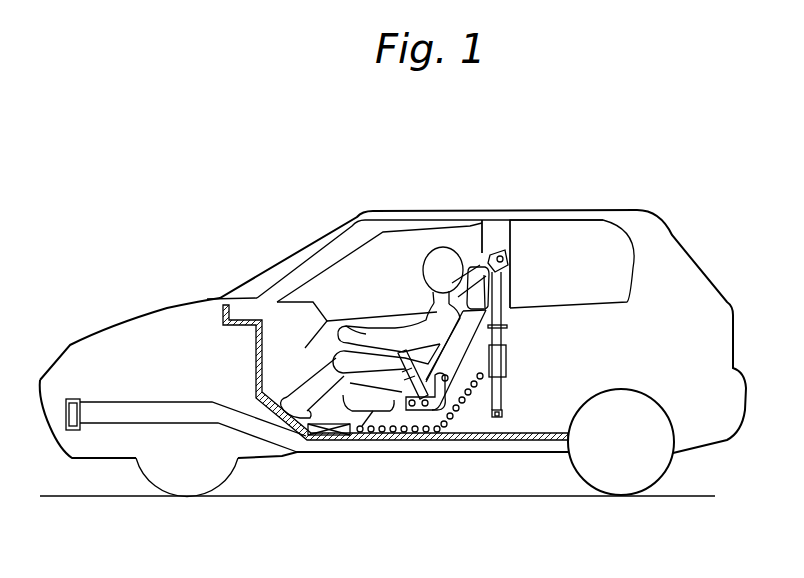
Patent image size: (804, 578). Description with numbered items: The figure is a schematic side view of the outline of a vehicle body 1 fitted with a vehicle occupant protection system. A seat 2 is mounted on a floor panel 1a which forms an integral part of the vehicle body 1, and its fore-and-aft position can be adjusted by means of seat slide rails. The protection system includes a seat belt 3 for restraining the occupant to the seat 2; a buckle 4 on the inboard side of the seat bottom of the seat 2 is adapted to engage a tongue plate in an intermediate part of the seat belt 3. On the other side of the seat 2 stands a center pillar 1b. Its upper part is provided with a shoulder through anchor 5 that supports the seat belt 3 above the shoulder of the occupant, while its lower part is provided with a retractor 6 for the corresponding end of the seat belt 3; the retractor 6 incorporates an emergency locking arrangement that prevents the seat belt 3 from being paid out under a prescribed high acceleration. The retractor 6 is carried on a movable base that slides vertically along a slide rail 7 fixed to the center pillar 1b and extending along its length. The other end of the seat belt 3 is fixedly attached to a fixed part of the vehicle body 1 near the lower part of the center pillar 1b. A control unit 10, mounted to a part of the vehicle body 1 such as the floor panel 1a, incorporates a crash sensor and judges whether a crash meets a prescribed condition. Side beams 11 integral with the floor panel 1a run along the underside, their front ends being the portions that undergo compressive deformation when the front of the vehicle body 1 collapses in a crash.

The vehicle body 1 is at (685, 260).
The floor panel 1a is at (443, 440).
The center pillar 1b is at (503, 249).
The seat 2 is at (452, 377).
The seat belt 3 is at (474, 266).
The buckle 4 is at (397, 405).
The shoulder through anchor 5 is at (501, 251).
The retractor 6 is at (504, 358).
The slide rail 7 is at (503, 403).
The control unit 10 is at (330, 437).
The side beams 11 is at (129, 402).